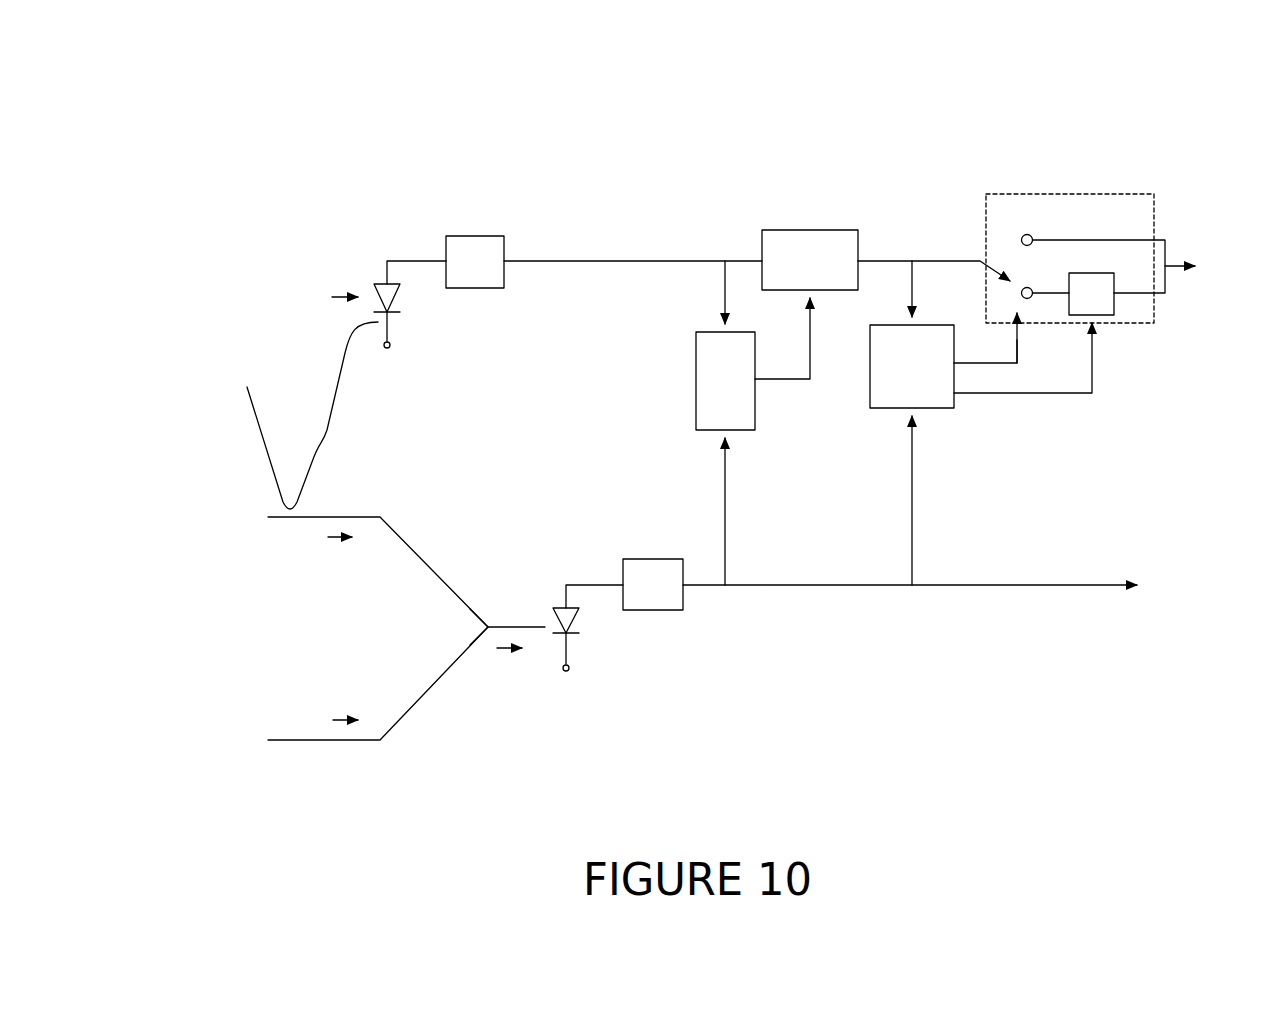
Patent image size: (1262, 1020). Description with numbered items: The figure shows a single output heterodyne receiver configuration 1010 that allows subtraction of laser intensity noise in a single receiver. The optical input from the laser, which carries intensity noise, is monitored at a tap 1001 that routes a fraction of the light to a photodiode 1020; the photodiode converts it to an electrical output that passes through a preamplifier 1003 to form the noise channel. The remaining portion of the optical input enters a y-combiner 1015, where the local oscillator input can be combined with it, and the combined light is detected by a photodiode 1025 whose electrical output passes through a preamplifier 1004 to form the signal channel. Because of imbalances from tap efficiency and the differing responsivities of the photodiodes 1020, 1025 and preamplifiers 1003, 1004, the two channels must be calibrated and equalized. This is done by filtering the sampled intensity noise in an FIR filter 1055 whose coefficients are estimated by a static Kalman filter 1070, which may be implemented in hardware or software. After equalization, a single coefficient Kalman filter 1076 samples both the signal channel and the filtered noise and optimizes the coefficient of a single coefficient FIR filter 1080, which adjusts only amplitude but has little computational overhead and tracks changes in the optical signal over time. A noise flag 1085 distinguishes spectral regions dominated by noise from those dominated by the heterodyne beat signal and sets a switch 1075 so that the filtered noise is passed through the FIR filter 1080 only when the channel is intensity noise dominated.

The tap 1001 is at (310, 487).
The preamplifier 1003 is at (472, 247).
The preamplifier 1004 is at (675, 603).
The single receiver configuration 1010 is at (734, 121).
The y-combiner 1015 is at (489, 622).
The photodiode 1020 is at (398, 296).
The photodiode 1025 is at (568, 650).
The FIR filter 1055 is at (807, 238).
The static Kalman filter 1070 is at (702, 388).
The switch 1075 is at (1036, 288).
The single coefficient Kalman filter 1076 is at (872, 398).
The single coefficient FIR filter 1080 is at (1106, 303).
The noise flag 1085 is at (1019, 338).